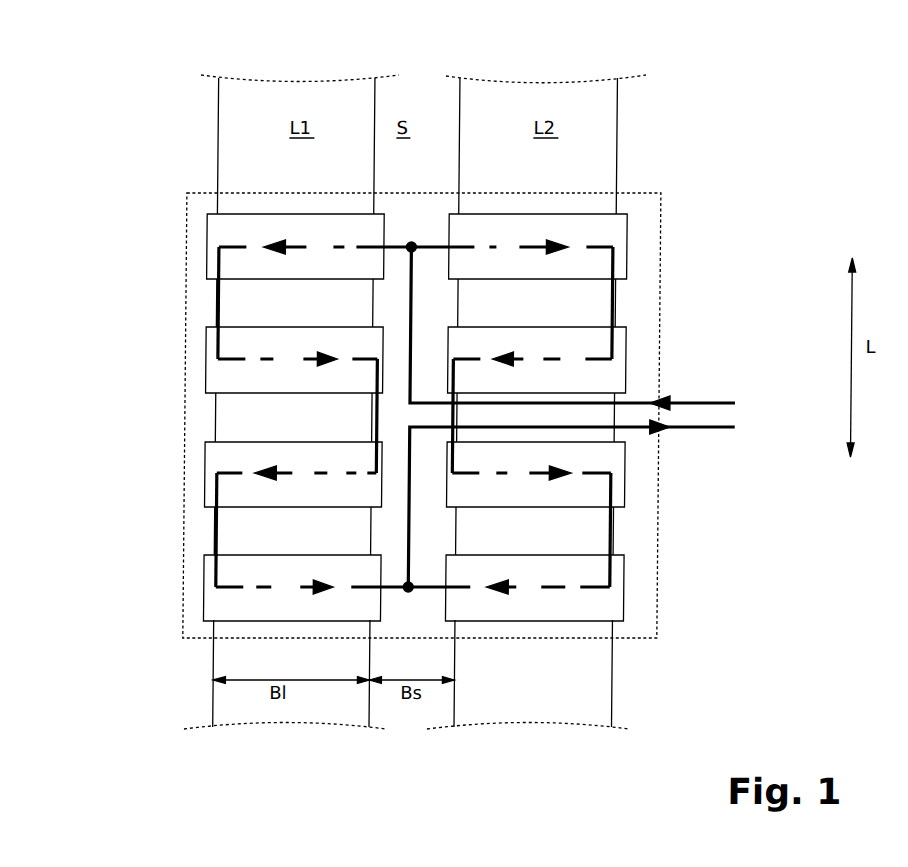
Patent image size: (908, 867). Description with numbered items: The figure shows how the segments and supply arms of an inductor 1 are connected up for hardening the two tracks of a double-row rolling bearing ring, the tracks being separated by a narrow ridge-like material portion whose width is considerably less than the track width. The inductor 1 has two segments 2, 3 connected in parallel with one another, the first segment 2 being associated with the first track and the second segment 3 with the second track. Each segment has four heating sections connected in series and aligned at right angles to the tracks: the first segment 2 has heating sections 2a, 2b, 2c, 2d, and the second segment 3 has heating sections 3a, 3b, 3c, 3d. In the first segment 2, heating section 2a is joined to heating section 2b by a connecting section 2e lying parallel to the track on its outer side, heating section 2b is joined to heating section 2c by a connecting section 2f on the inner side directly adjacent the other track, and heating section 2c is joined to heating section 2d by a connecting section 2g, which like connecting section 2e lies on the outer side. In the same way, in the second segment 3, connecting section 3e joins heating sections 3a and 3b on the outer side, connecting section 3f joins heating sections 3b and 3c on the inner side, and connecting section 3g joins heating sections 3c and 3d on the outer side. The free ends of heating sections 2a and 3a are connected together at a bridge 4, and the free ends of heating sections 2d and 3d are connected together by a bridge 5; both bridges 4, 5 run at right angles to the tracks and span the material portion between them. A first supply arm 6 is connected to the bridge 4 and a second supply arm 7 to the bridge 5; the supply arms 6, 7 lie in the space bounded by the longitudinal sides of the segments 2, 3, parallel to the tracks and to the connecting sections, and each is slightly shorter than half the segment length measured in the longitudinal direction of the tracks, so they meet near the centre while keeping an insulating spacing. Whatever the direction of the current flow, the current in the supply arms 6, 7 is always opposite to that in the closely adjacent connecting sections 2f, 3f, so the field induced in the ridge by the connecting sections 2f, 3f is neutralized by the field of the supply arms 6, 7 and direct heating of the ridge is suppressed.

The inductor 1 is at (186, 218).
The first segment 2 is at (192, 346).
The heating section 2a is at (268, 590).
The heating section 2b is at (235, 473).
The heating section 2c is at (270, 362).
The heating section 2d is at (300, 245).
The connecting section 2e is at (213, 538).
The connecting section 2f is at (372, 422).
The connecting section 2g is at (216, 303).
The second segment 3 is at (643, 347).
The heating section 3a is at (550, 590).
The heating section 3b is at (593, 473).
The heating section 3c is at (588, 362).
The heating section 3d is at (525, 245).
The connecting section 3e is at (612, 537).
The connecting section 3f is at (452, 387).
The connecting section 3g is at (613, 302).
The bridge 4 is at (428, 592).
The bridge 5 is at (435, 245).
The first supply arm 6 is at (410, 535).
The second supply arm 7 is at (408, 300).